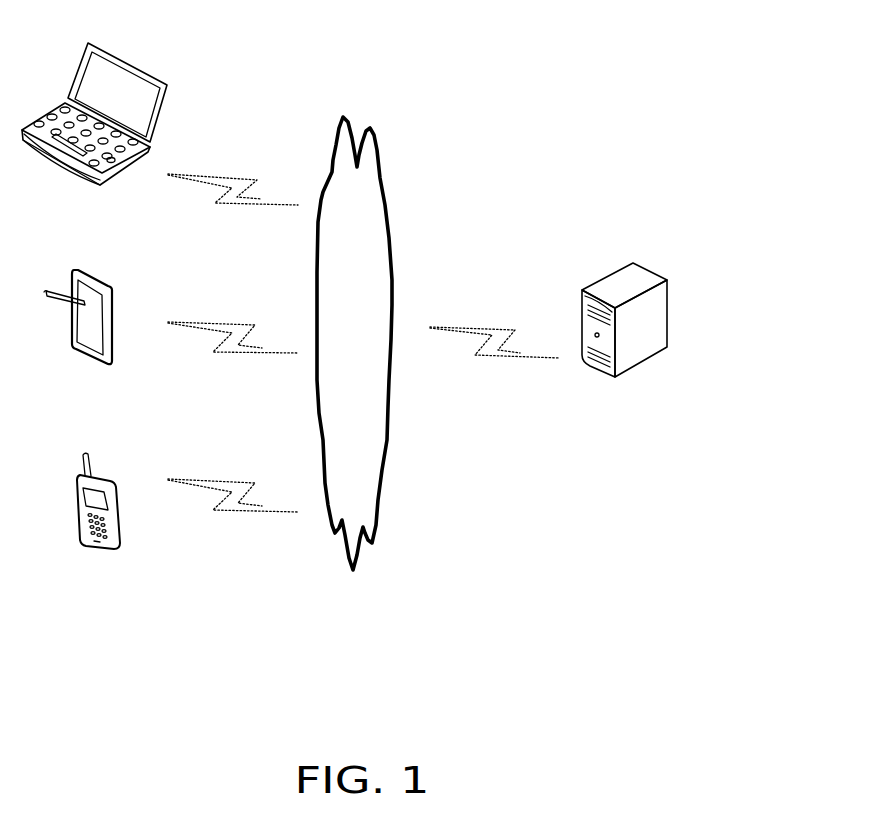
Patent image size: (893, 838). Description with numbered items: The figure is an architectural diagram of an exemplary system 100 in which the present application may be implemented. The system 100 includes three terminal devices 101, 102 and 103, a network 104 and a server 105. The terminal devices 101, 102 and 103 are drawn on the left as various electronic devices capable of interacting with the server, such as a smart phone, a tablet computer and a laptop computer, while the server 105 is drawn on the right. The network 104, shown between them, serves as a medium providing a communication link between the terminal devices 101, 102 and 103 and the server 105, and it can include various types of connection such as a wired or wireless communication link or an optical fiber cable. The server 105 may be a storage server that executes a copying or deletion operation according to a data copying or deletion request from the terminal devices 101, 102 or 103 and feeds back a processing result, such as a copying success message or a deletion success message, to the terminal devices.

The system 100 is at (548, 33).
The terminal device 101 is at (98, 520).
The terminal device 102 is at (78, 335).
The terminal device 103 is at (94, 131).
The network 104 is at (354, 343).
The server 105 is at (624, 339).